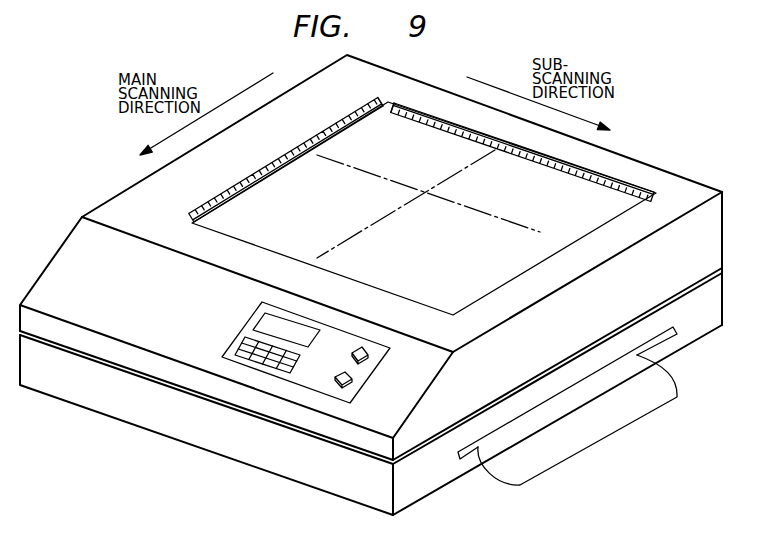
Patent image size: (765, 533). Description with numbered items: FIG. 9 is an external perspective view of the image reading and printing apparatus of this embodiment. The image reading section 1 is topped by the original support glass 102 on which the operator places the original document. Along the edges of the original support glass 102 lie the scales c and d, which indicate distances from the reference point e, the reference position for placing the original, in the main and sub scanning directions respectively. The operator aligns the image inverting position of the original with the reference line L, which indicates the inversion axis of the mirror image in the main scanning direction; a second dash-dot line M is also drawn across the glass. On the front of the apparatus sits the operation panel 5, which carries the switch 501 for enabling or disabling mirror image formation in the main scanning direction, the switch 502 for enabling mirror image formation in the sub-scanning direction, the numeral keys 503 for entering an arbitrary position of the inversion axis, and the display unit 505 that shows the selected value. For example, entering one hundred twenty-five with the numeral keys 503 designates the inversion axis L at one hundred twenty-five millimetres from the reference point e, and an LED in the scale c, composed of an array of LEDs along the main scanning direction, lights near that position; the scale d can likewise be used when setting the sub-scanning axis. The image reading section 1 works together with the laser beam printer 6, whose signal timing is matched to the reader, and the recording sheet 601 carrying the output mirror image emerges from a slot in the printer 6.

The image reading section 1 is at (700, 184).
The original support glass 102 is at (488, 289).
The operation panel 5 is at (298, 353).
The switch 501 is at (369, 357).
The switch 502 is at (350, 383).
The numeral keys 503 is at (243, 347).
The display unit 505 is at (263, 323).
The laser beam printer 6 is at (692, 333).
The recording sheet 601 is at (575, 457).
The scale c is at (188, 215).
The scale d is at (655, 196).
The reference point e is at (387, 104).
The main scanning reference line M is at (483, 157).
The reference line L is at (527, 228).